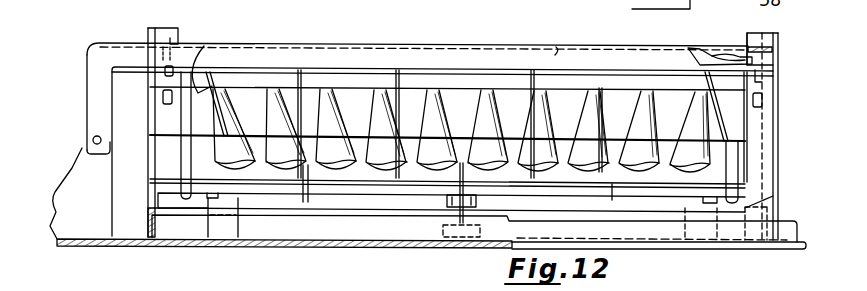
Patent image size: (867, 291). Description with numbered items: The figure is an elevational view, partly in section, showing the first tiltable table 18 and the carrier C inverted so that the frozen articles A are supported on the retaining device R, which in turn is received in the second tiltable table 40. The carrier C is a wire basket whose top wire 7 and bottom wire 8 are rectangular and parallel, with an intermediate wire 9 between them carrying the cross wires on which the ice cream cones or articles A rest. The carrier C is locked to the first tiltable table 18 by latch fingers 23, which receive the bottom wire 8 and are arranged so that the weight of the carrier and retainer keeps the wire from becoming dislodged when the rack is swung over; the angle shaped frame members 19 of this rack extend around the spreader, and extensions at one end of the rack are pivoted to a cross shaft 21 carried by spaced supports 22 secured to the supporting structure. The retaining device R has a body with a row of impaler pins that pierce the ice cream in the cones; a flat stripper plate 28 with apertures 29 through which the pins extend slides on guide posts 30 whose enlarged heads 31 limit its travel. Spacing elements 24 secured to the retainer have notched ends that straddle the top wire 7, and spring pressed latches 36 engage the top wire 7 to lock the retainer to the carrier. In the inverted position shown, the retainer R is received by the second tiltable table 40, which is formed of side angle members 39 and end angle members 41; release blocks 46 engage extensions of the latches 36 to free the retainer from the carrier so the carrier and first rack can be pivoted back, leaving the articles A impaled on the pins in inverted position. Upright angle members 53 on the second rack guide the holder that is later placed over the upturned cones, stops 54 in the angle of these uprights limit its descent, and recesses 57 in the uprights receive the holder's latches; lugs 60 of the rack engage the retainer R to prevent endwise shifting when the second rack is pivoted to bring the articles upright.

The top wire 7 is at (421, 186).
The bottom wire 8 is at (180, 42).
The intermediate wire 9 is at (441, 133).
The first tiltable table 18 is at (327, 25).
The angle shaped frame members 19 is at (417, 52).
The cross member or shaft 21 is at (94, 133).
The spaced supports 22 is at (61, 193).
The latch fingers 23 is at (728, 50).
The spacing elements 24 is at (320, 203).
The stripper plate 28 is at (352, 186).
The apertures 29 is at (186, 48).
The guide posts 30 is at (681, 142).
The enlarged heads 31 is at (664, 140).
The spring pressed latches 36 is at (480, 142).
The side angle members 39 is at (667, 232).
The second tiltable table 40 is at (556, 54).
The end angle members 41 is at (148, 240).
The release members or blocks 46 is at (456, 232).
The angle members 53 is at (148, 141).
The stops 54 is at (163, 98).
The recesses 57 is at (764, 33).
The lugs 60 is at (221, 228).
The frozen articles A is at (524, 122).
The carrier C is at (203, 46).
The retaining device R is at (323, 203).